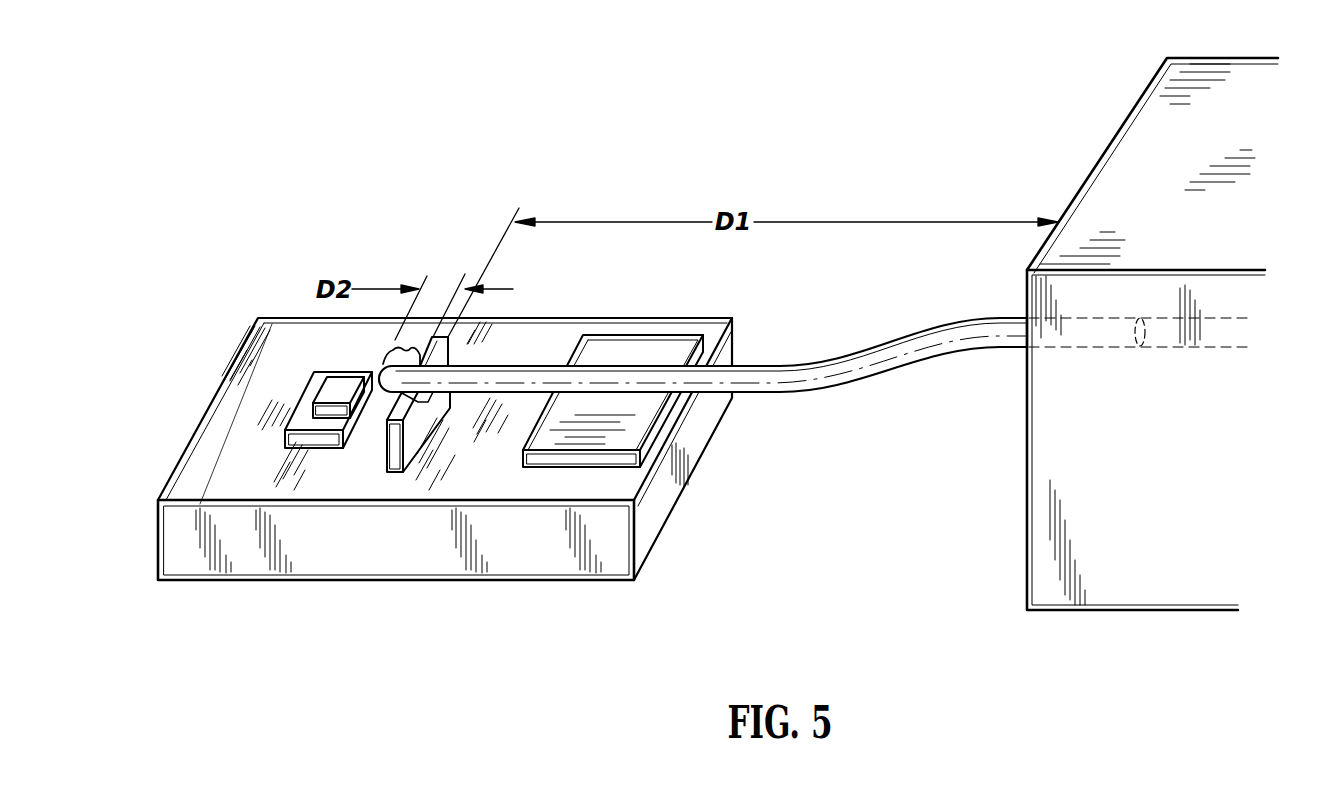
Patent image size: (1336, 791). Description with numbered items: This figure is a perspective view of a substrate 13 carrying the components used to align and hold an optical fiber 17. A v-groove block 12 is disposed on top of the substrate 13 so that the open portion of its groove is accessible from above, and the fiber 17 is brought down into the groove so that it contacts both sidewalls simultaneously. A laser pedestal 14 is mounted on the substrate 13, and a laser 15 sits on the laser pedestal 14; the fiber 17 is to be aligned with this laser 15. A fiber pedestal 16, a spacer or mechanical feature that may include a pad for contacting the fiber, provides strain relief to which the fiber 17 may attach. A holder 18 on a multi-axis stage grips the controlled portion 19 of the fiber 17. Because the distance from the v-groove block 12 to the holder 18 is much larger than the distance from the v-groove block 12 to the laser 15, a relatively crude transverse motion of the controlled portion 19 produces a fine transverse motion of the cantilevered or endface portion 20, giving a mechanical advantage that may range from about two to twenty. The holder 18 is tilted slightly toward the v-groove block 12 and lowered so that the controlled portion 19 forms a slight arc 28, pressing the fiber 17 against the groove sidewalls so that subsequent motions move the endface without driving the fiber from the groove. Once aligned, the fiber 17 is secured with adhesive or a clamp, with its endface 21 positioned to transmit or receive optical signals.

The v-groove block 12 is at (397, 446).
The substrate 13 is at (342, 488).
The laser pedestal 14 is at (310, 410).
The laser 15 is at (342, 390).
The fiber pedestal 16 is at (627, 433).
The fiber 17 is at (872, 360).
The holder 18 is at (1116, 588).
The controlled portion 19 is at (507, 153).
The cantilevered or endface portion 20 is at (407, 347).
The endface 21 is at (384, 362).
The arc 28 is at (822, 338).